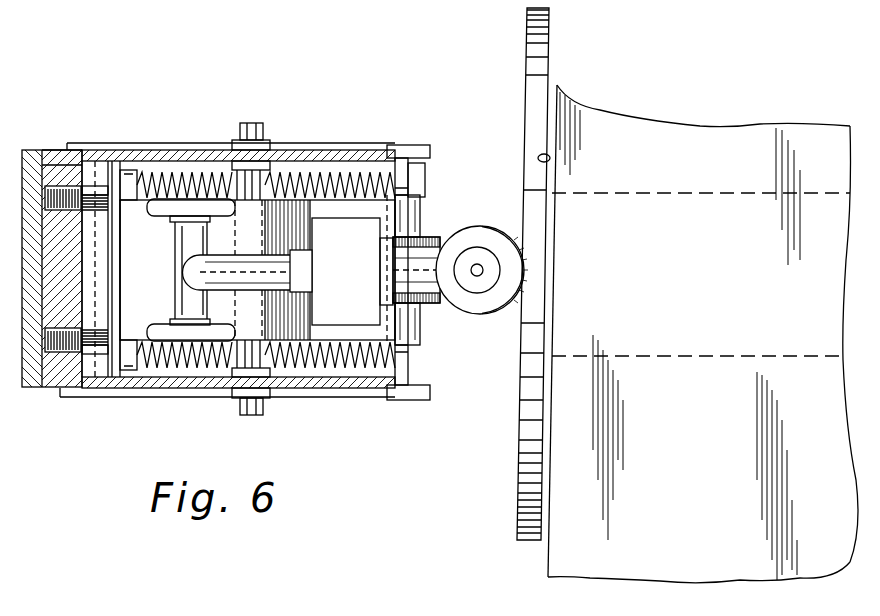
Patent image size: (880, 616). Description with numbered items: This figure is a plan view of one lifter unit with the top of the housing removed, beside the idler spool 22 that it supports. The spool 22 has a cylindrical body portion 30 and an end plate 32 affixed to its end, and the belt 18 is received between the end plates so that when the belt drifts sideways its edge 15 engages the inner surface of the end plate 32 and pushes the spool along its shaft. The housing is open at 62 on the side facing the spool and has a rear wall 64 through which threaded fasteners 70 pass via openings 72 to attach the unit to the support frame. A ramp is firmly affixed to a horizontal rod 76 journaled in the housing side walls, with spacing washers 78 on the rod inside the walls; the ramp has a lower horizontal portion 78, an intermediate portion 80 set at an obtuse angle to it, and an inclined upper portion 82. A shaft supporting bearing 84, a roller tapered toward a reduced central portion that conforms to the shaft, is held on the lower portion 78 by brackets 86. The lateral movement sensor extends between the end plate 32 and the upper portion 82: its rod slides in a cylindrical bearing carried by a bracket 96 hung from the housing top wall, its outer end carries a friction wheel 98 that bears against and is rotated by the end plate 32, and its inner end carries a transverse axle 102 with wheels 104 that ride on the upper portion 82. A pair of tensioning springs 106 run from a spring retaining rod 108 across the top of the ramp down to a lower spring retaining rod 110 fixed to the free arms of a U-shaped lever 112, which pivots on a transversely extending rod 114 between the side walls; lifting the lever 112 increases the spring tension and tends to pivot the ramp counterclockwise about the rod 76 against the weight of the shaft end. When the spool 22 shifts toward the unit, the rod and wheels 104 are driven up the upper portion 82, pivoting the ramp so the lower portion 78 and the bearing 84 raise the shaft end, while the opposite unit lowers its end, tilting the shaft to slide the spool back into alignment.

The edge of the belt 15 is at (548, 154).
The belt 18 is at (672, 128).
The idler spool 22 is at (570, 58).
The cylindrical body portion 30 is at (703, 196).
The end plate 32 is at (538, 66).
The open side of housing 62 is at (393, 149).
The rear wall 64 is at (62, 150).
The threaded fasteners 70 is at (98, 216).
The openings 72 is at (67, 212).
The rod 76 is at (237, 205).
The lower portion of the ramp 78 is at (423, 332).
The intermediate portion of the ramp 80 is at (293, 318).
The upper portion of the ramp 82 is at (133, 266).
The shaft supporting bearing 84 is at (430, 237).
The brackets 86 is at (390, 312).
The bracket 96 is at (332, 262).
The wheel 98 is at (495, 243).
The axle 102 is at (182, 286).
The wheels 104 is at (155, 204).
The tensioning springs 106 is at (342, 176).
The spring retaining rod 108 is at (112, 166).
The lower spring retaining rod 110 is at (422, 172).
The U-shaped lever 112 is at (158, 143).
The transversely extending rod 114 is at (254, 125).